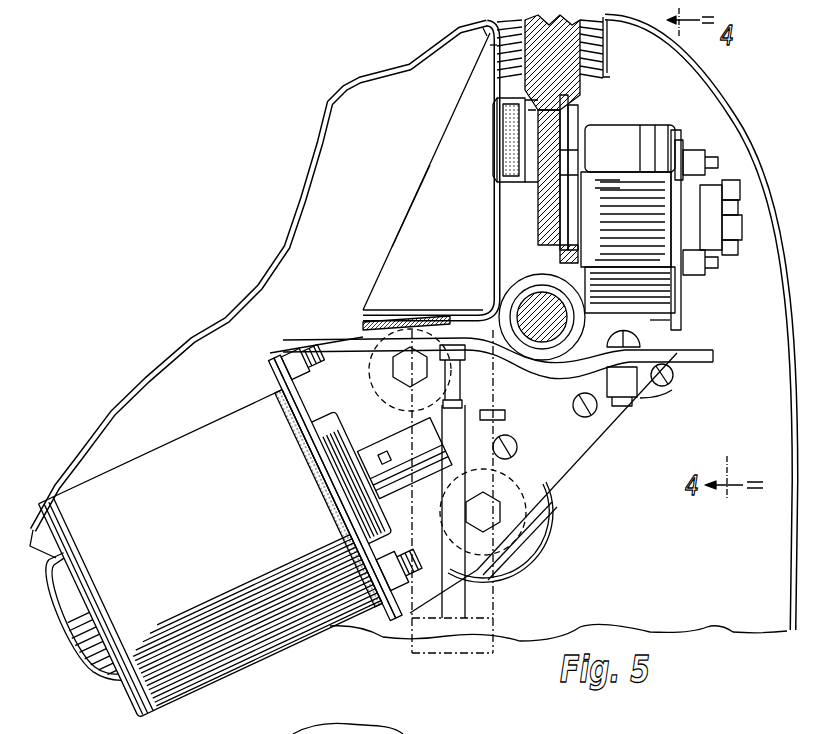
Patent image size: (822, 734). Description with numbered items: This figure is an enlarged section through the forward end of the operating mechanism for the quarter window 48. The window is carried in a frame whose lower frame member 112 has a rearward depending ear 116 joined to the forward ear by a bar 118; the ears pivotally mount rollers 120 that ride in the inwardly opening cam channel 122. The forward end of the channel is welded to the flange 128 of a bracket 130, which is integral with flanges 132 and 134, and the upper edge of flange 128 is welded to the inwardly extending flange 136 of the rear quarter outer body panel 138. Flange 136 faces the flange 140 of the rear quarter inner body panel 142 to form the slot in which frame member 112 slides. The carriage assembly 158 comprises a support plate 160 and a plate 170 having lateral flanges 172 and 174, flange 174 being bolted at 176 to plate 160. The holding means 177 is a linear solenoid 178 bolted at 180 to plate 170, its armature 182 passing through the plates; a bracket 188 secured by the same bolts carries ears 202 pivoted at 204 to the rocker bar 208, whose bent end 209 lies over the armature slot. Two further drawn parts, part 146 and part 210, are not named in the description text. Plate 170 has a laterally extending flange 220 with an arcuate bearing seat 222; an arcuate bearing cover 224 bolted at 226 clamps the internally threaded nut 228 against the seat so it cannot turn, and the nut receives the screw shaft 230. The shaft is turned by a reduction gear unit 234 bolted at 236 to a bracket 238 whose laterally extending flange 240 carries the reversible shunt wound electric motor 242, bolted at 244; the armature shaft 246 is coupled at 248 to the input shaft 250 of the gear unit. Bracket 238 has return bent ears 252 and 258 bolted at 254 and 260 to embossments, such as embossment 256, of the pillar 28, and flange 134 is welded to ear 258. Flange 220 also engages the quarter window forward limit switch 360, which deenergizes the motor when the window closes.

The pillar 28 is at (727, 622).
The window 48 is at (490, 46).
The lower frame member 112 is at (590, 42).
The rearward depending ear 116 is at (578, 124).
The bar 118 is at (535, 202).
The rollers 120 is at (578, 160).
The cam channel 122 is at (497, 138).
The flange 128 is at (484, 200).
The bracket 130 is at (386, 247).
The flange 132 is at (428, 159).
The flange 134 is at (382, 318).
The inwardly extending flange 136 is at (491, 72).
The rear quarter outer body panel 138 is at (313, 168).
The flange 140 is at (608, 62).
The rear quarter inner body panel 142 is at (740, 98).
The support plate 146 is at (570, 110).
The carriage assembly 158 is at (665, 122).
The support plate 160 is at (630, 148).
The plate 170 is at (672, 132).
The lateral flange 172 is at (676, 286).
The lateral flange 174 is at (612, 180).
The bolt 176 is at (610, 212).
The holding means 177 is at (645, 122).
The linear solenoid 178 is at (682, 312).
The bolt 180 is at (707, 163).
The armature 182 is at (530, 223).
The bracket 188 is at (683, 150).
The laterally extending ears 202 is at (737, 190).
The pivot 204 is at (715, 190).
The rocker bar 208 is at (742, 229).
The laterally bent end 209 is at (738, 208).
The terminal nut 210 is at (738, 249).
The laterally extending flange 220 is at (672, 389).
The arcuate bearing seat 222 is at (538, 378).
The arcuate bearing cover 224 is at (620, 274).
The bolt 226 is at (453, 340).
The internally threaded nut 228 is at (615, 340).
The screw shaft 230 is at (580, 256).
The reduction gear unit 234 is at (672, 324).
The bolt 236 is at (518, 451).
The bracket 238 is at (605, 446).
The laterally extending flange 240 is at (278, 358).
The reversible shunt wound electric motor 242 is at (180, 438).
The bolt 244 is at (318, 390).
The armature shaft 246 is at (350, 482).
The coupling 248 is at (405, 442).
The input shaft 250 is at (470, 413).
The return bent ear 252 is at (530, 536).
The bolt 254 is at (508, 493).
The embossment 256 is at (540, 546).
The return bent ear 258 is at (305, 347).
The bolt 260 is at (392, 362).
The quarter window forward limit switch 360 is at (500, 615).